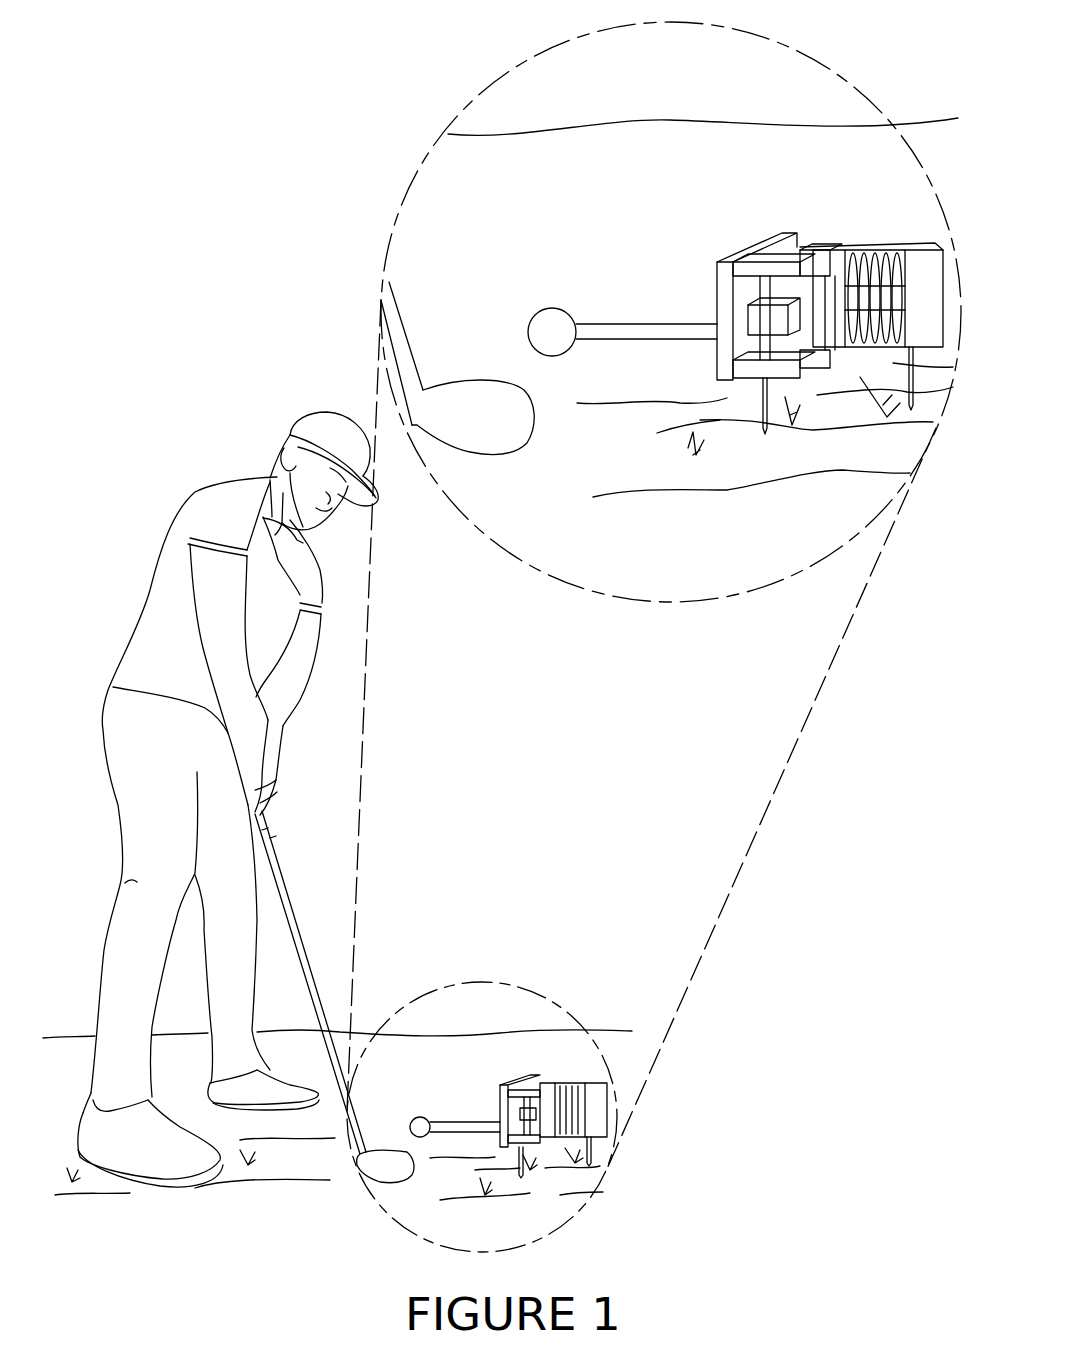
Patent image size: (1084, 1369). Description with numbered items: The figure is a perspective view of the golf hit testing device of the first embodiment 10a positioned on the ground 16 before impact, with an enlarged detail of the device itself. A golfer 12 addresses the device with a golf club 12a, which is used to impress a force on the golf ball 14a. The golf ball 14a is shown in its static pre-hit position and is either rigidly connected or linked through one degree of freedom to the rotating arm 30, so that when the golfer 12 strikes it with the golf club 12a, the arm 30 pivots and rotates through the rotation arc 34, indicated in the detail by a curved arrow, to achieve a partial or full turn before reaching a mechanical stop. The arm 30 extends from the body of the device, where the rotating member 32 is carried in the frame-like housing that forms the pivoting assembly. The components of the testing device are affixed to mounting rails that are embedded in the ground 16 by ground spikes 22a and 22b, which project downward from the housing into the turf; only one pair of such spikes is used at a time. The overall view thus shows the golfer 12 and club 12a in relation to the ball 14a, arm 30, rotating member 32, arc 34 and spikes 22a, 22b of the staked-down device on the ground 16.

The first embodiment of present invention 10a is at (428, 84).
The golfer 12 is at (165, 586).
The golf club 12a is at (298, 912).
The golf ball in static pre-hit position 14a is at (553, 320).
The ground 16 is at (680, 450).
The ground spike attached to mounting rail 22a is at (767, 423).
The ground spike attached to mounting rail 22b is at (913, 403).
The rotating arm 30 is at (615, 324).
The rotating member 32 is at (757, 336).
The rotation arc of rotating arm 34 is at (690, 330).